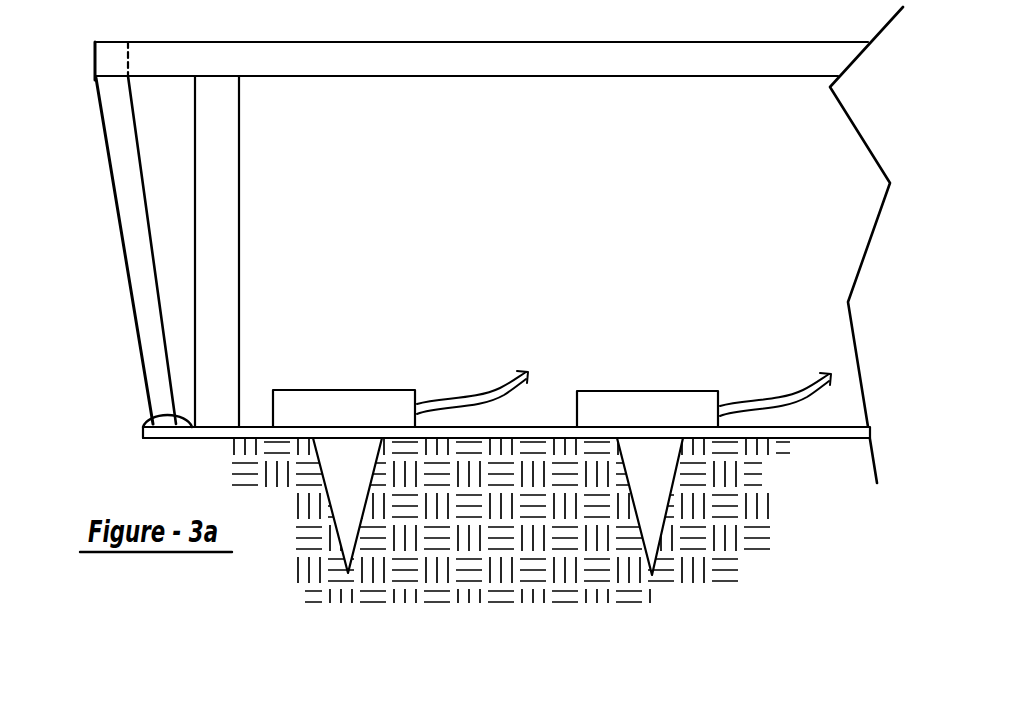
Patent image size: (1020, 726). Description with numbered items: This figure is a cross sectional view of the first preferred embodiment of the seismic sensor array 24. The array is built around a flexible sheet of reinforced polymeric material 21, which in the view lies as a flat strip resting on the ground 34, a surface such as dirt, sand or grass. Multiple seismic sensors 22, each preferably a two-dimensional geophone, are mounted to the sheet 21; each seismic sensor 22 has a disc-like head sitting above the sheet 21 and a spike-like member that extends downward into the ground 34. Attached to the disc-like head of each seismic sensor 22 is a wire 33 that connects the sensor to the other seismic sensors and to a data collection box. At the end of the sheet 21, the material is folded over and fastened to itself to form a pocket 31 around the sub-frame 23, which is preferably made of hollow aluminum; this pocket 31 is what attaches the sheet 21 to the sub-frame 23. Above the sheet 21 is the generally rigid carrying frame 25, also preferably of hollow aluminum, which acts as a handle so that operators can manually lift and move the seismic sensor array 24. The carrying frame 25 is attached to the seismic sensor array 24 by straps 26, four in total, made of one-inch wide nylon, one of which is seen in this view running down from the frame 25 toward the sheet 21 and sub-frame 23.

The flexible sheet of reinforced polymeric material 21 is at (284, 430).
The seismic sensor 22 is at (347, 397).
The sub-frame 23 is at (143, 423).
The seismic sensor array 24 is at (487, 438).
The carrying frame 25 is at (202, 192).
The strap 26 is at (112, 170).
The pocket 31 is at (146, 444).
The wire 33 is at (482, 396).
The ground 34 is at (733, 512).